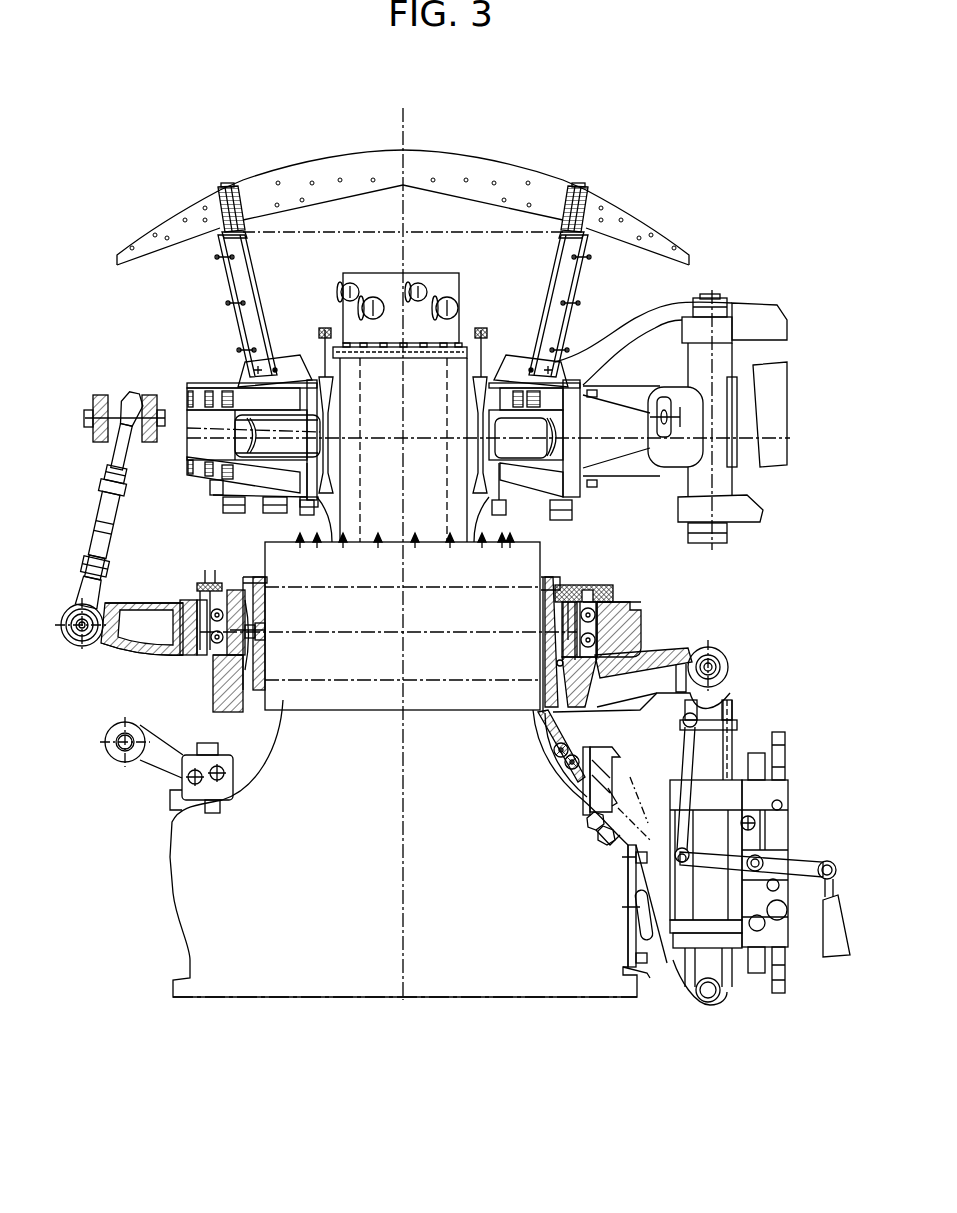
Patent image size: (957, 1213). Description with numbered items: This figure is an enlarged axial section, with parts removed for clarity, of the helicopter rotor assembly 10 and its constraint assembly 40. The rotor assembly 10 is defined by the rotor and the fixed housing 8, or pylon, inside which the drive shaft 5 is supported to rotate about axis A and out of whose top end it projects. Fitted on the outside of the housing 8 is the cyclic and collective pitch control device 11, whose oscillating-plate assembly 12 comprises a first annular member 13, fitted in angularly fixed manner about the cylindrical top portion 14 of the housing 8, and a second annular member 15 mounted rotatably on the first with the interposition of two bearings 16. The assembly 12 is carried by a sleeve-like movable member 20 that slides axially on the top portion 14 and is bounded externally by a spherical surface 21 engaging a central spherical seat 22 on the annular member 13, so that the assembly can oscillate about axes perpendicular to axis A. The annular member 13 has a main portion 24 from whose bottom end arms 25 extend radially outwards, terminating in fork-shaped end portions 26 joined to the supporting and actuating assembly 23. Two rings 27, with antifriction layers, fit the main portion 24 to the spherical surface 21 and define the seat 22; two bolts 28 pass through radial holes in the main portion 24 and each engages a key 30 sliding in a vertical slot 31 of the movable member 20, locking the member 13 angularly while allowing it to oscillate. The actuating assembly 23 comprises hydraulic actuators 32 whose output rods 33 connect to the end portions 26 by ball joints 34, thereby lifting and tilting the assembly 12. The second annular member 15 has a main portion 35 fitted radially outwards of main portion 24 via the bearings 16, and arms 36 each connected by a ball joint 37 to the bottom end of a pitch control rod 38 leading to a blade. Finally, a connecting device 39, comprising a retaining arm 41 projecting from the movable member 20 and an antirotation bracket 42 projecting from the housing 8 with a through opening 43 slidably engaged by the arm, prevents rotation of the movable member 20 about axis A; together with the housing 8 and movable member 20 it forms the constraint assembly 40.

The drive shaft 5 is at (437, 372).
The housing 8 is at (223, 972).
The rotor assembly 10 is at (252, 1007).
The cyclic and collective pitch control device 11 is at (132, 678).
The oscillating-plate assembly 12 is at (110, 665).
The first annular member 13 is at (226, 598).
The top portion 14 is at (250, 566).
The second annular member 15 is at (628, 600).
The bearings 16 is at (183, 603).
The movable member 20 is at (549, 573).
The spherical annular surface 21 is at (550, 622).
The central spherical seat 22 is at (585, 668).
The supporting and actuating assembly 23 is at (830, 968).
The main portion 24 is at (213, 670).
The arms 25 is at (658, 693).
The fork-shaped end portions 26 is at (722, 668).
The rings 27 is at (563, 588).
The bolts 28 is at (255, 618).
The key 30 is at (255, 638).
The slot 31 is at (255, 657).
The hydraulic actuators 32 is at (740, 985).
The output rods 33 is at (737, 722).
The ball joint 34 is at (730, 657).
The main portion 35 is at (640, 627).
The arms 36 is at (117, 603).
The ball joint 37 is at (78, 617).
The pitch control rod 38 is at (99, 498).
The connecting device 39 is at (528, 777).
The constraint assembly 40 is at (590, 852).
The retaining arm 41 is at (574, 783).
The antirotation bracket 42 is at (590, 828).
The through opening 43 is at (588, 803).